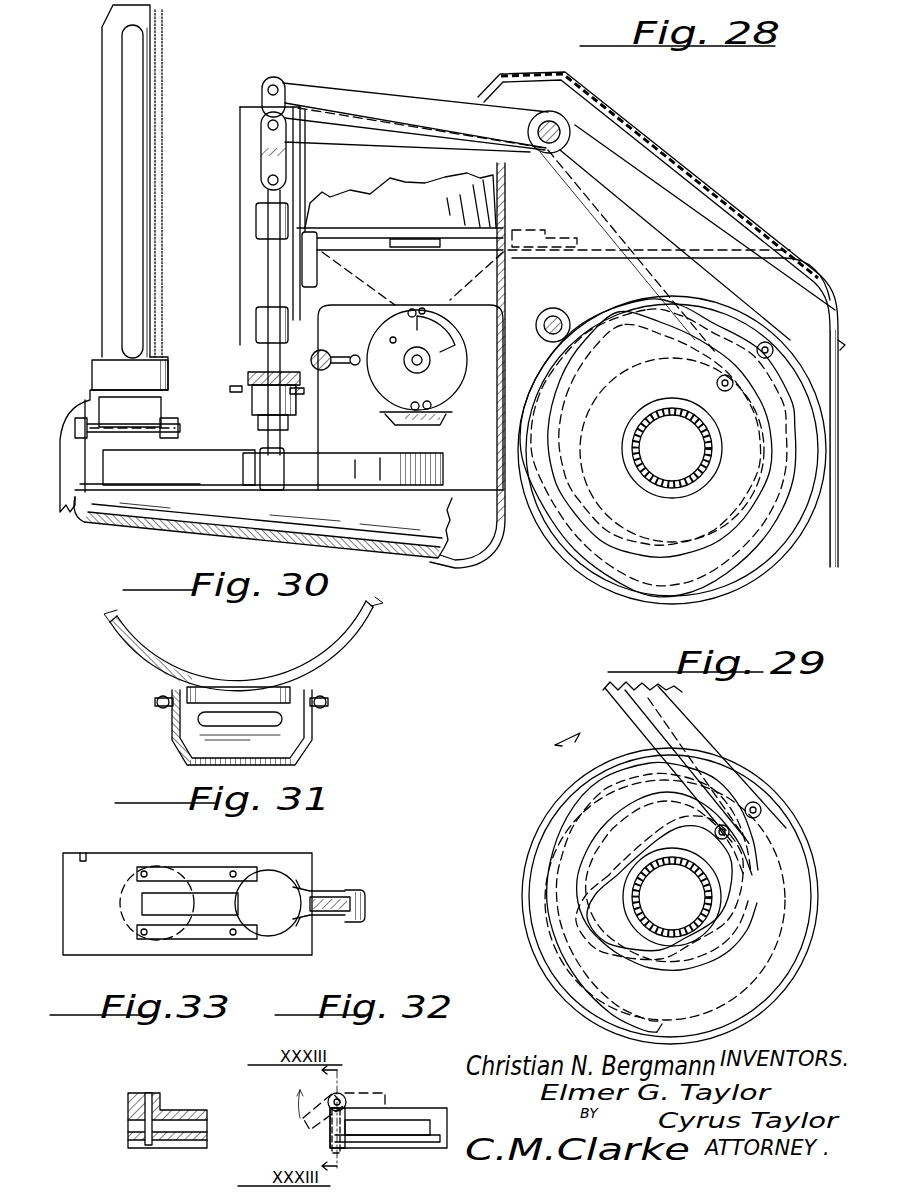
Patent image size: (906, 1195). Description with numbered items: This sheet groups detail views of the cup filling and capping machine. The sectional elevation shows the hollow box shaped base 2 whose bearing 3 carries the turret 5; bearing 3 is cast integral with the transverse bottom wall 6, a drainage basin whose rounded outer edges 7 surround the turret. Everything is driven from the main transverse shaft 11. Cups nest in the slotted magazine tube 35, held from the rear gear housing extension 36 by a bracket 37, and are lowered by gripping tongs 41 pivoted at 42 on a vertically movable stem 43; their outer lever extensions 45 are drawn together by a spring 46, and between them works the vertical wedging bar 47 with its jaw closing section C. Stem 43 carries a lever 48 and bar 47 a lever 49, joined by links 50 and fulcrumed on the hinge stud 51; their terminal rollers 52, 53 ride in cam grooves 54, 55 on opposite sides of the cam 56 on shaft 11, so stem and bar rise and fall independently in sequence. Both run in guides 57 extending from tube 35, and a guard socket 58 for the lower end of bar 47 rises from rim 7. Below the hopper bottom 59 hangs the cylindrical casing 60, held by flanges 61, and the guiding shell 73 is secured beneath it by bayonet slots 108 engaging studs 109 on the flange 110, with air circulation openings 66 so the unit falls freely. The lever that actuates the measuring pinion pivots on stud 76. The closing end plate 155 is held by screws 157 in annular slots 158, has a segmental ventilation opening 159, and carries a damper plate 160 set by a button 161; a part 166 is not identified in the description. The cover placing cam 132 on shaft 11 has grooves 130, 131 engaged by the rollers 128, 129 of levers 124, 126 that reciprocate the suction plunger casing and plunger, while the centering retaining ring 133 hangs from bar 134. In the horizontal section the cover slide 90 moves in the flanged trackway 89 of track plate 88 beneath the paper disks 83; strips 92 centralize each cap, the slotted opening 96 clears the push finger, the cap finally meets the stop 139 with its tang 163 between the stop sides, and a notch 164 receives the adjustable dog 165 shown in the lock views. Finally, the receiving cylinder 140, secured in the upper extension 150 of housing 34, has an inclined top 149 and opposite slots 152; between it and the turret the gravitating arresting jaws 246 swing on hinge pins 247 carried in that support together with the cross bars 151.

In FIG. 28, the base 2 is at (503, 522).
In FIG. 28, the bearing 3 is at (250, 488).
In FIG. 28, the turret 5 is at (289, 479).
In FIG. 28, the bottom wall 6 is at (428, 563).
In FIG. 28, the outer edges 7 is at (263, 524).
In FIG. 28, the main transverse shaft 11 is at (705, 452).
In FIG. 29, the main transverse shaft 11 is at (700, 878).
In FIG. 28, the bearing housing 34 is at (68, 493).
In FIG. 28, the slotted magazine tube 35 is at (250, 268).
In FIG. 28, the rear gear housing extension 36 is at (411, 397).
In FIG. 28, the bracket 37 is at (400, 235).
In FIG. 28, the gripping tongs 41 is at (292, 394).
In FIG. 28, the tongs pivot 42 is at (290, 405).
In FIG. 28, the vertically movable stem 43 is at (262, 252).
In FIG. 28, the outer lever extensions 45 is at (262, 402).
In FIG. 28, the spring 46 is at (255, 380).
In FIG. 28, the wedging bar 47 is at (270, 288).
In FIG. 28, the lever 48 is at (343, 95).
In FIG. 28, the lever 49 is at (412, 122).
In FIG. 28, the links 50 is at (270, 103).
In FIG. 28, the hinge stud 51 is at (545, 125).
In FIG. 28, the terminal roller 52 is at (715, 383).
In FIG. 28, the terminal roller 53 is at (772, 345).
In FIG. 28, the cam groove 54 is at (690, 540).
In FIG. 28, the cam groove 55 is at (780, 535).
In FIG. 28, the cam 56 is at (628, 593).
In FIG. 28, the guides 57 is at (268, 216).
In FIG. 28, the guard socket 58 is at (270, 465).
In FIG. 28, the hopper bottom 59 is at (418, 270).
In FIG. 28, the cylindrical casing 60 is at (382, 333).
In FIG. 30, the cylindrical casing 60 is at (357, 625).
In FIG. 28, the flanges 61 is at (413, 238).
In FIG. 30, the air circulation openings 66 is at (216, 714).
In FIG. 28, the tubular shell 73 is at (405, 418).
In FIG. 30, the tubular shell 73 is at (178, 746).
In FIG. 28, the stud 76 is at (545, 337).
In FIG. 31, the paper disk 83 is at (268, 903).
In FIG. 33, the track plate 88 is at (135, 1148).
In FIG. 32, the track plate 88 is at (437, 1150).
In FIG. 32, the flanged trackway 89 is at (452, 1133).
In FIG. 31, the cover slide plate 90 is at (195, 853).
In FIG. 33, the cover slide plate 90 is at (197, 1138).
In FIG. 32, the cover slide plate 90 is at (372, 1146).
In FIG. 31, the strips 92 is at (165, 875).
In FIG. 31, the slotted opening 96 is at (190, 904).
In FIG. 30, the bayonet joint slots 108 is at (174, 705).
In FIG. 30, the pins or studs 109 is at (160, 698).
In FIG. 30, the flange 110 is at (158, 708).
In FIG. 29, the lever 124 is at (615, 700).
In FIG. 29, the lever 126 is at (680, 727).
In FIG. 29, the terminal roller 128 is at (732, 830).
In FIG. 29, the terminal roller 129 is at (762, 806).
In FIG. 29, the cam groove 130 is at (560, 945).
In FIG. 29, the cam groove 131 is at (560, 843).
In FIG. 29, the cover placing cam 132 is at (553, 811).
In FIG. 28, the centering retaining ring 133 is at (258, 393).
In FIG. 31, the bar 134 is at (333, 912).
In FIG. 31, the stop 139 is at (306, 880).
In FIG. 28, the receiving cylinder 140 is at (107, 308).
In FIG. 28, the inclined top 149 is at (150, 8).
In FIG. 28, the upper extension 150 is at (130, 375).
In FIG. 28, the cross bars 151 is at (172, 432).
In FIG. 28, the slots 152 is at (133, 210).
In FIG. 28, the closing end plate 155 is at (440, 378).
In FIG. 28, the screws 157 is at (425, 313).
In FIG. 28, the annular slots 158 is at (415, 312).
In FIG. 28, the segmental opening 159 is at (441, 361).
In FIG. 28, the damper plate 160 is at (388, 360).
In FIG. 28, the button 161 is at (390, 342).
In FIG. 31, the cover tang 163 is at (316, 900).
In FIG. 31, the notch 164 is at (83, 853).
In FIG. 33, the notch 164 is at (155, 1143).
In FIG. 32, the notch 164 is at (327, 1136).
In FIG. 33, the adjustable dog 165 is at (146, 1126).
In FIG. 32, the adjustable dog 165 is at (362, 1098).
In FIG. 28, the bar 166 is at (395, 410).
In FIG. 28, the cup arresting jaws 246 is at (130, 412).
In FIG. 28, the hinge pins 247 is at (138, 430).
In FIG. 28, the jaw closing section C is at (265, 420).